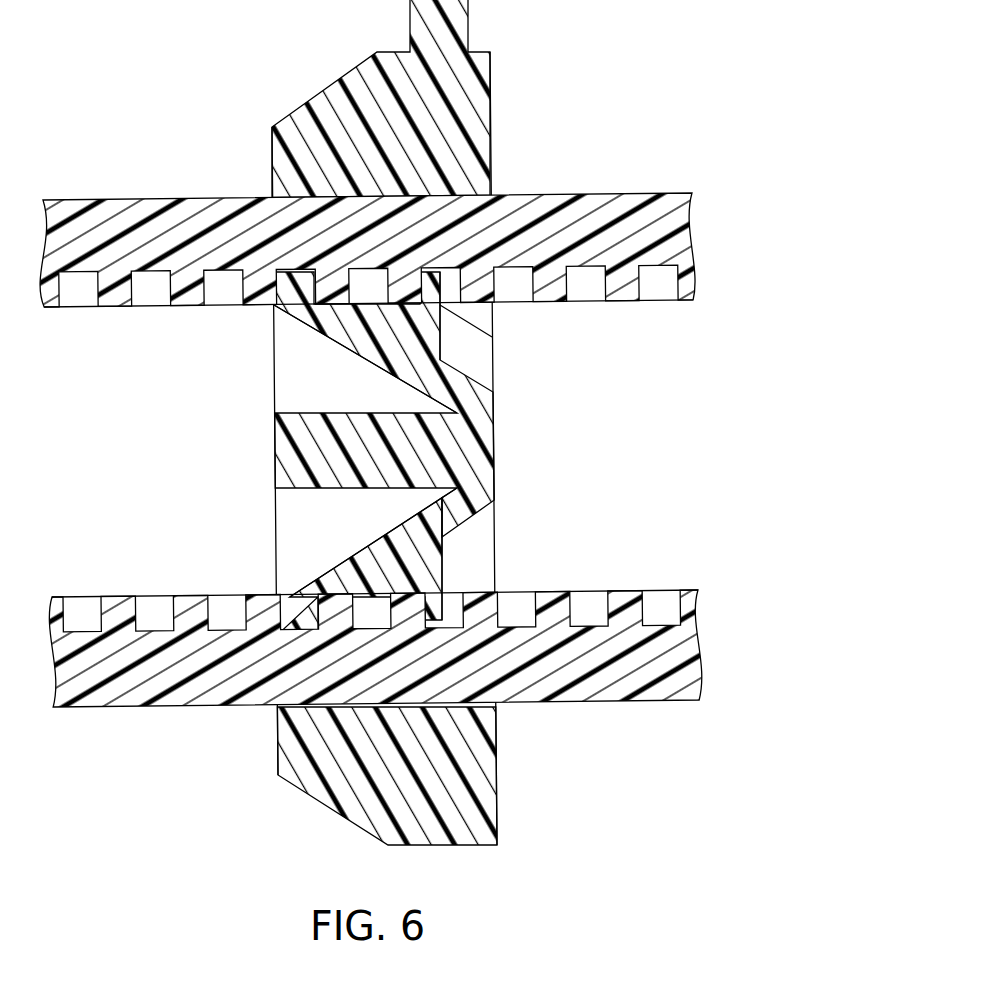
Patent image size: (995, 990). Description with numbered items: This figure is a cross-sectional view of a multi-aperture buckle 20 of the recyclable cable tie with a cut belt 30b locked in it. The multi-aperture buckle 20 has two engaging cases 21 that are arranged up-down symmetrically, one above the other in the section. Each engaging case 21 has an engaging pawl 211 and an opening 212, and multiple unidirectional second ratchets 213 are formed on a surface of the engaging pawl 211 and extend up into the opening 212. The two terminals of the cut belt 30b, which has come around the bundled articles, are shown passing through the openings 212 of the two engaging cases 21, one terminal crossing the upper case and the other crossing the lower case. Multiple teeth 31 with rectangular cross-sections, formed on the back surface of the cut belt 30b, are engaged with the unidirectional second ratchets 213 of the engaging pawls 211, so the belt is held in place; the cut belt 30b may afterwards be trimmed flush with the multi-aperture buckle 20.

The multi-aperture buckle 20 is at (278, 95).
The engaging case 21 is at (262, 386).
The engaging pawl 211 is at (380, 330).
The opening 212 is at (455, 215).
The unidirectional second ratchet 213 is at (430, 288).
The cut belt 30b is at (640, 203).
The tooth 31 is at (112, 295).